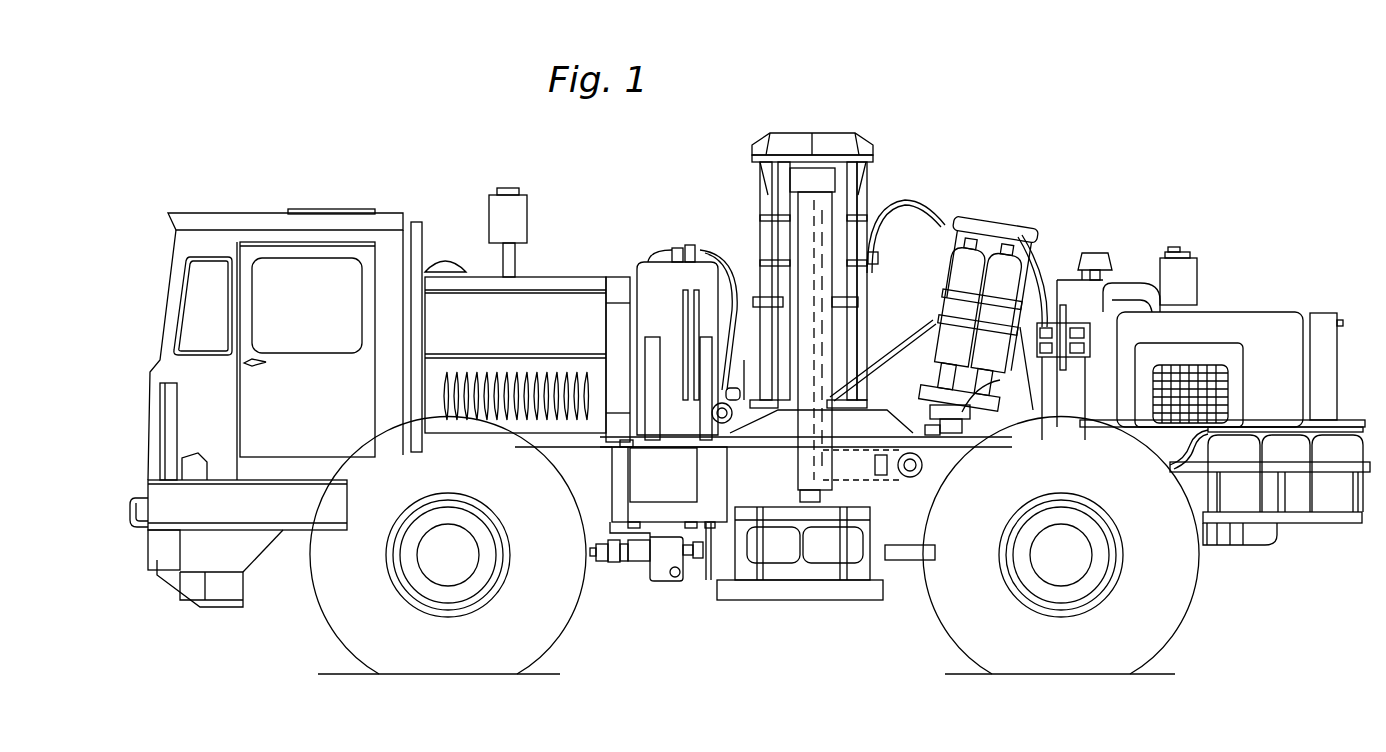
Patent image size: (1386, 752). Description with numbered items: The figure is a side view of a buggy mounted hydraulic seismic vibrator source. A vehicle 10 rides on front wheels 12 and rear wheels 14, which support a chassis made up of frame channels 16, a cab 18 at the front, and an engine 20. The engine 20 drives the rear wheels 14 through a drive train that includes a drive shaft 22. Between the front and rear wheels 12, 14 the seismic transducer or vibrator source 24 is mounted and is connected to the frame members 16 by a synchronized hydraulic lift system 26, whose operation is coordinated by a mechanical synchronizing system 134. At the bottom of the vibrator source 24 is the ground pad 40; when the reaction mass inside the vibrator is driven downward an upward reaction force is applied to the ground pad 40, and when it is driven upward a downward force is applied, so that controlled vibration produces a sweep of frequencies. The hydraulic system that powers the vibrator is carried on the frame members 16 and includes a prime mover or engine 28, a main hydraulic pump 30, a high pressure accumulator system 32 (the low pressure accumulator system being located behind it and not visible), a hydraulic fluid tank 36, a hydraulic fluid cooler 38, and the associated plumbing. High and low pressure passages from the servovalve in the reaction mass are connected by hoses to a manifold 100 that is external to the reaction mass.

The vehicle 10 is at (268, 157).
The front wheels 12 is at (340, 622).
The rear wheels 14 is at (1163, 621).
The frame channels 16 is at (585, 497).
The cab 18 is at (253, 213).
The engine 20 is at (480, 316).
The drive shaft 22 is at (905, 553).
The seismic vibrator source 24 is at (806, 128).
The hydraulic lift system 26 is at (805, 247).
The prime mover 28 is at (1268, 322).
The main hydraulic pump 30 is at (1050, 402).
The high pressure accumulator system 32 is at (996, 272).
The hydraulic fluid tank 36 is at (665, 303).
The hydraulic fluid cooler 38 is at (1325, 318).
The ground pad 40 is at (865, 600).
The manifold 100 is at (975, 425).
The mechanical synchronizing system 134 is at (922, 465).